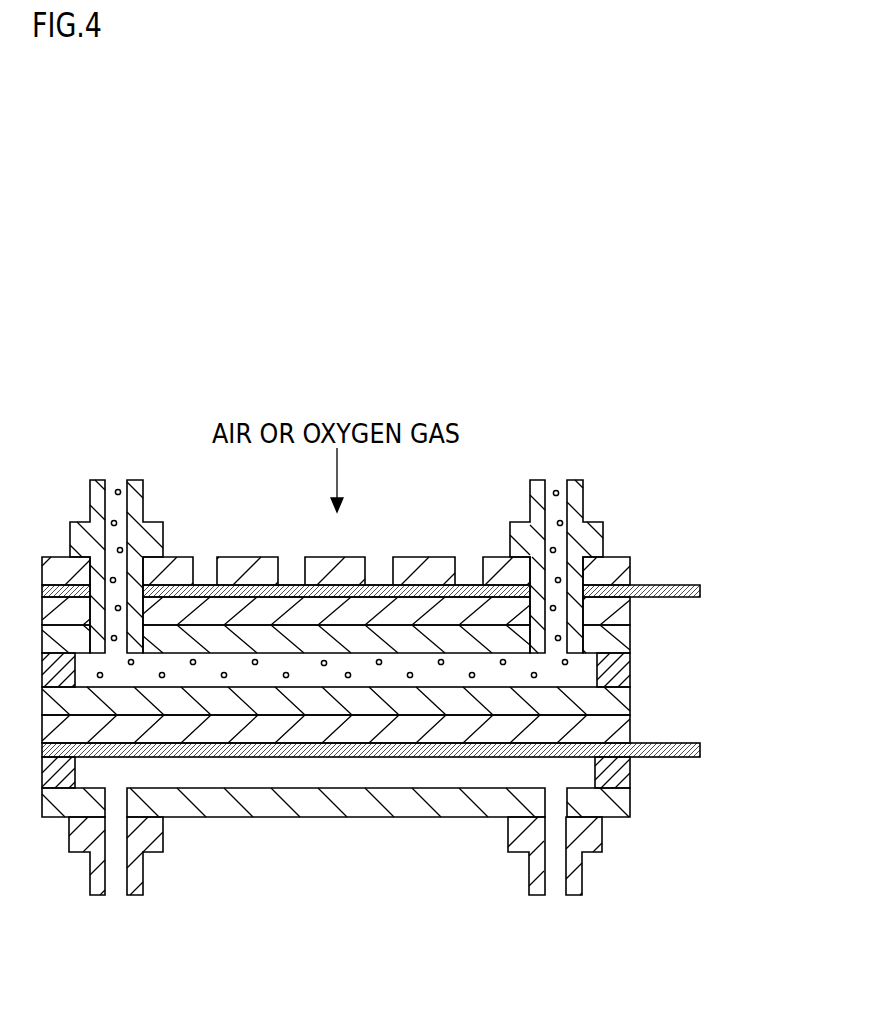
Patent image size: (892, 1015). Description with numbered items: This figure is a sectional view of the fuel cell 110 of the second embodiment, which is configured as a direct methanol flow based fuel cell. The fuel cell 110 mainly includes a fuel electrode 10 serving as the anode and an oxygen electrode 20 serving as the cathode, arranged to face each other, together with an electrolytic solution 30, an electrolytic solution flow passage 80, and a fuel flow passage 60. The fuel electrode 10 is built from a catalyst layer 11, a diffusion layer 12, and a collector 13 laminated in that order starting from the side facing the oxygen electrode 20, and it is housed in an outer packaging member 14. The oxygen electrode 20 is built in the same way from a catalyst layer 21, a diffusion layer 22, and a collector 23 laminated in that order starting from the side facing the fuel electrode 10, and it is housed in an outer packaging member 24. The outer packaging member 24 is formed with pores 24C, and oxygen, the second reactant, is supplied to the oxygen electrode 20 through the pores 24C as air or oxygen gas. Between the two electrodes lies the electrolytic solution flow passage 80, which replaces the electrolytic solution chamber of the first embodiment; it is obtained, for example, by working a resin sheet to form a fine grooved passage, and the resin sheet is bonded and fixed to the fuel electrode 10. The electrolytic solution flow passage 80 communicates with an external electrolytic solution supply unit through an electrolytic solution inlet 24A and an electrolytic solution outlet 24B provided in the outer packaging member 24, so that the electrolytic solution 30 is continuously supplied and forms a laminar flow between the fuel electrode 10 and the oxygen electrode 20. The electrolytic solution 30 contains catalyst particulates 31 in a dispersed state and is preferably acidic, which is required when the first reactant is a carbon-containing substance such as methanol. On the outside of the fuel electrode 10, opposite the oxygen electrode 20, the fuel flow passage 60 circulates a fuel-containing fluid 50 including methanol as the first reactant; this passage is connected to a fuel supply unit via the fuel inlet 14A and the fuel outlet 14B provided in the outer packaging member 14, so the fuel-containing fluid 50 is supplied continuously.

The fuel cell 110 is at (650, 510).
The fuel electrode 10 is at (792, 695).
The catalyst layer 11 is at (620, 700).
The diffusion layer 12 is at (620, 727).
The collector 13 is at (700, 752).
The outer packaging member 14 is at (623, 803).
The fuel inlet 14A is at (121, 901).
The fuel outlet 14B is at (562, 901).
The oxygen electrode 20 is at (792, 577).
The catalyst layer 21 is at (620, 640).
The diffusion layer 22 is at (620, 612).
The collector 23 is at (700, 590).
The outer packaging member 24 is at (620, 575).
The electrolytic solution inlet 24A is at (121, 465).
The electrolytic solution outlet 24B is at (560, 465).
The pores 24C is at (210, 556).
The electrolytic solution 30 is at (587, 675).
The catalyst particulates 31 is at (324, 667).
The fuel-containing fluid 50 is at (585, 772).
The fuel flow passage 60 is at (230, 782).
The electrolytic solution flow passage 80 is at (277, 686).